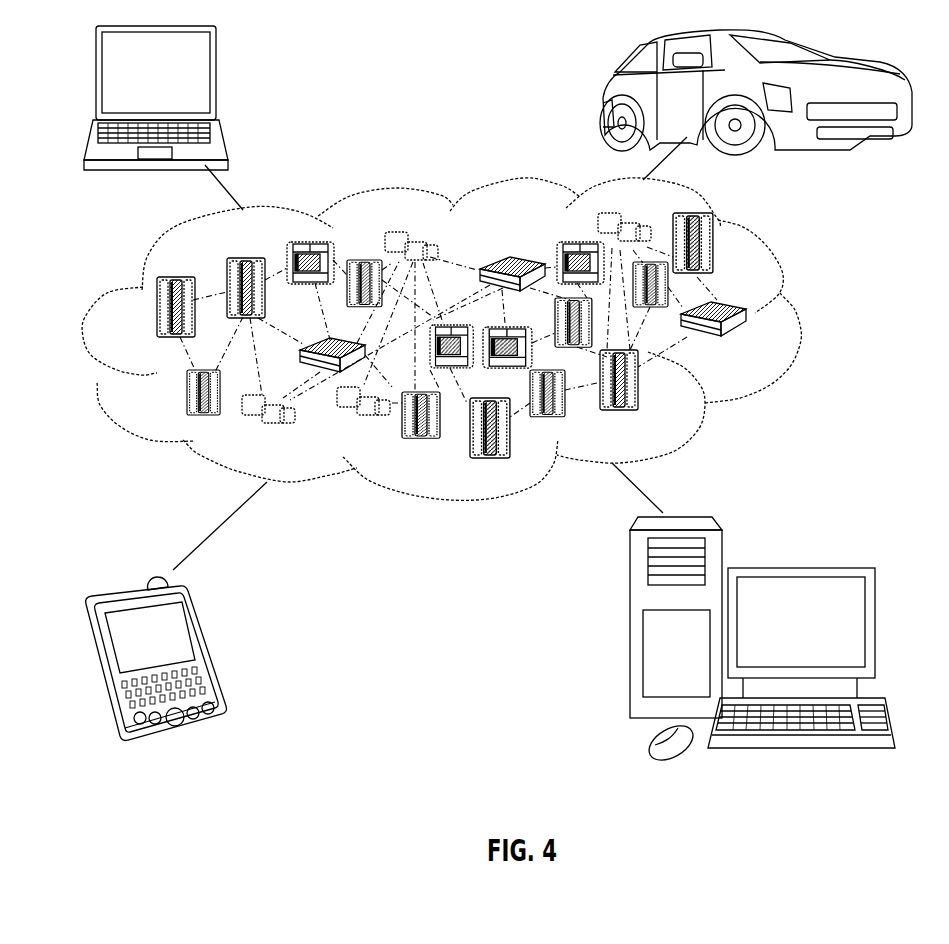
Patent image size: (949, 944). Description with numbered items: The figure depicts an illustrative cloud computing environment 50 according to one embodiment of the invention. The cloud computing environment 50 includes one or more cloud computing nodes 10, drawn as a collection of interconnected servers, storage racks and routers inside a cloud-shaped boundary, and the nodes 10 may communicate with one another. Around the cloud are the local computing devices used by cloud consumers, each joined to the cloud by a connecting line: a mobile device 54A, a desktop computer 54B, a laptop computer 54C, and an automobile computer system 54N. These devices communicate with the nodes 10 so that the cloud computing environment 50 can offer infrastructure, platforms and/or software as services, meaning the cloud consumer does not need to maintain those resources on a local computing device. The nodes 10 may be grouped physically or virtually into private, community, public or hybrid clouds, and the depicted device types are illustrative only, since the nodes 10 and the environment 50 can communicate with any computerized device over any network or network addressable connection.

The cloud computing node 10 is at (758, 351).
The cloud computing environment 50 is at (800, 313).
The mobile device 54A is at (207, 645).
The desktop computer 54B is at (797, 566).
The laptop computer 54C is at (217, 80).
The automobile computer system 54N is at (604, 97).